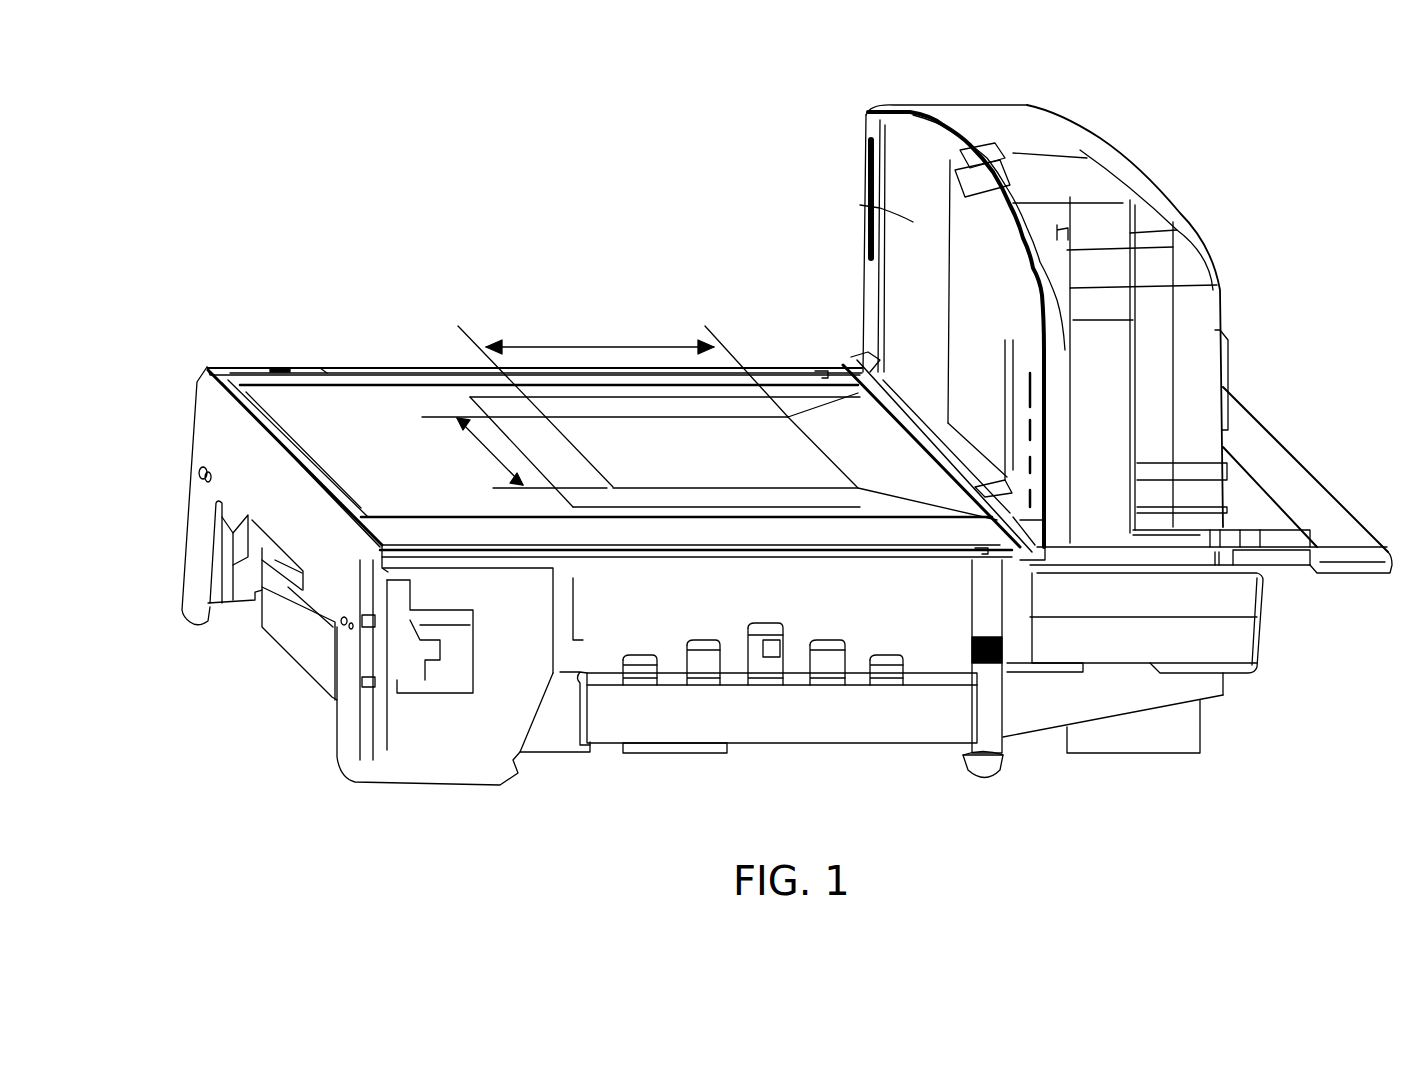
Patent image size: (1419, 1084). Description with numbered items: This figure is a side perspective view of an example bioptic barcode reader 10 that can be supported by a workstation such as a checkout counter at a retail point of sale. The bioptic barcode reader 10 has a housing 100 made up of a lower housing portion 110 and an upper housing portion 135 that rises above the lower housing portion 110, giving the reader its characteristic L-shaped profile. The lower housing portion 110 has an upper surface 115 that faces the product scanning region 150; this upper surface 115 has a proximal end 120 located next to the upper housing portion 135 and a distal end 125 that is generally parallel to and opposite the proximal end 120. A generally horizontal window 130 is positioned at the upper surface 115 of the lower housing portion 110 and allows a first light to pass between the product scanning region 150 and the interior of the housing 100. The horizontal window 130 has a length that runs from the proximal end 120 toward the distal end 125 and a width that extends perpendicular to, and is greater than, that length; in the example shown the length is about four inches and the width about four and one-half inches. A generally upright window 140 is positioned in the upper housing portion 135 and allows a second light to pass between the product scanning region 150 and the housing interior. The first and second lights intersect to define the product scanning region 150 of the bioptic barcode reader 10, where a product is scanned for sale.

The bioptic barcode reader 10 is at (431, 156).
The housing 100 is at (1280, 648).
The lower housing portion 110 is at (828, 718).
The upper surface 115 is at (773, 366).
The proximal end 120 is at (877, 402).
The distal end 125 is at (272, 448).
The horizontal window 130 is at (731, 466).
The upper housing portion 135 is at (1212, 290).
The upright window 140 is at (860, 205).
The product scanning region 150 is at (669, 259).